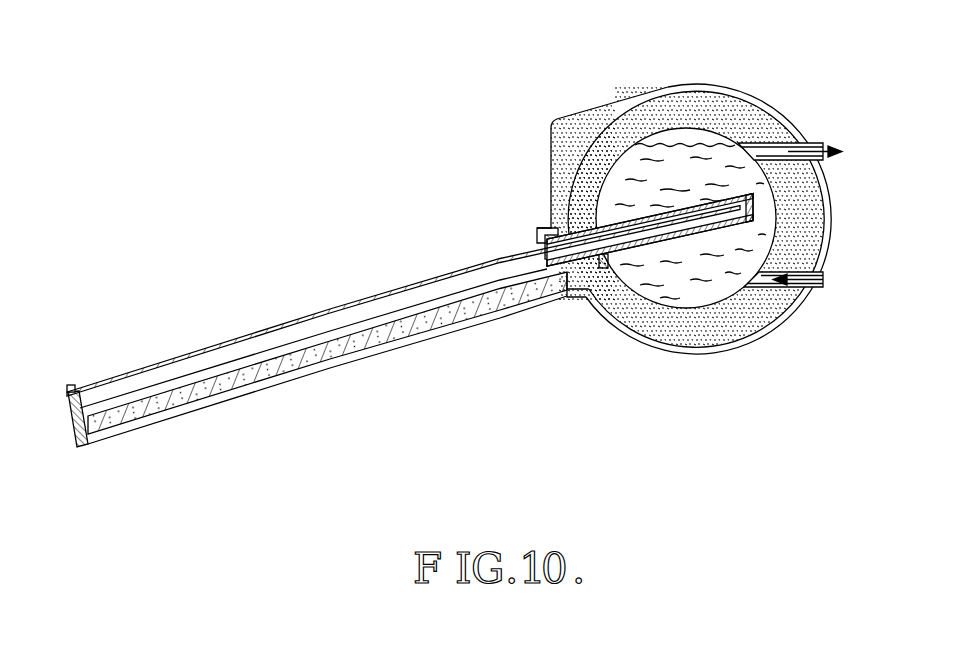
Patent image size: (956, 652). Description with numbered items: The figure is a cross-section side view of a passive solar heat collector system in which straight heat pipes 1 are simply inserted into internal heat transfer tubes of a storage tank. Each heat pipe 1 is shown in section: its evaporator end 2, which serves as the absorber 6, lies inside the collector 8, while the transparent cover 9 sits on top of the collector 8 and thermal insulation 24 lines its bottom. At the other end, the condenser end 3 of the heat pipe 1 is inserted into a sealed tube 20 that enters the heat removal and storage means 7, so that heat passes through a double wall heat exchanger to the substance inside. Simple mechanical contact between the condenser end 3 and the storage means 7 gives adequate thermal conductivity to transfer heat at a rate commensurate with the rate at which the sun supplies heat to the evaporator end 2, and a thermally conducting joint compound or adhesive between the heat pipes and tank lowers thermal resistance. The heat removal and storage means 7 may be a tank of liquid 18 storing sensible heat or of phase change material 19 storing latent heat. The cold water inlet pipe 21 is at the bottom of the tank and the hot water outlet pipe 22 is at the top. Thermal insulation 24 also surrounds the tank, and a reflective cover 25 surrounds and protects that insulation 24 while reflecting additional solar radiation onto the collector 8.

The heat pipe 1 is at (313, 379).
The evaporator end 2 is at (313, 379).
The absorber 6 is at (386, 323).
The condenser end 3 is at (650, 232).
The heat removal and storage means 7 is at (678, 127).
The collector 8 is at (272, 336).
The transparent cover 9 is at (138, 369).
The liquid 18 is at (702, 169).
The phase change material 19 is at (717, 163).
The sealed tube 20 is at (684, 236).
The cold water inlet pipe 21 is at (821, 290).
The hot water outlet pipe 22 is at (813, 143).
The thermal insulation 24 is at (799, 208).
The reflective cover 25 is at (550, 156).